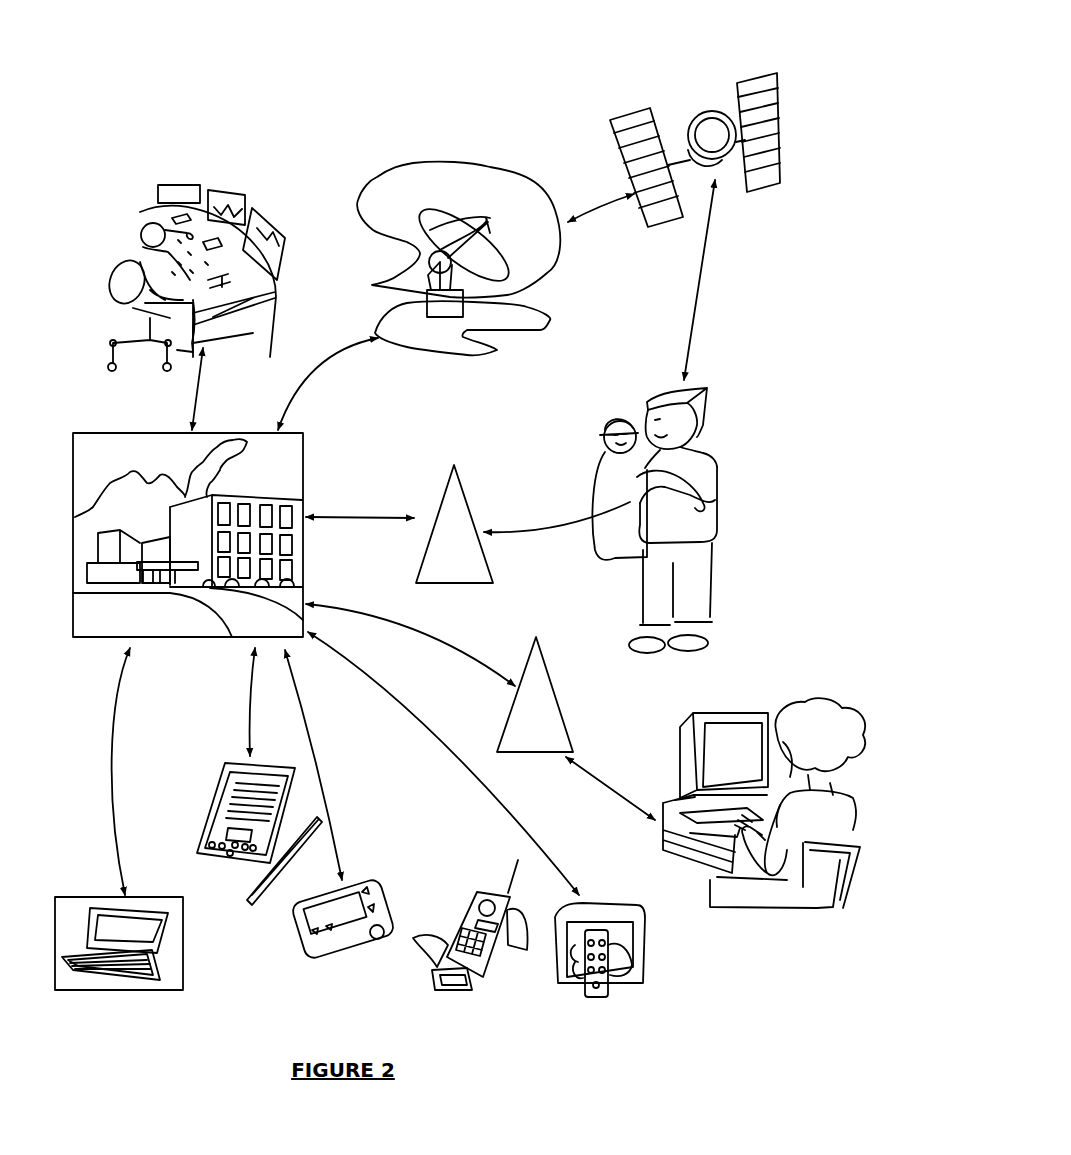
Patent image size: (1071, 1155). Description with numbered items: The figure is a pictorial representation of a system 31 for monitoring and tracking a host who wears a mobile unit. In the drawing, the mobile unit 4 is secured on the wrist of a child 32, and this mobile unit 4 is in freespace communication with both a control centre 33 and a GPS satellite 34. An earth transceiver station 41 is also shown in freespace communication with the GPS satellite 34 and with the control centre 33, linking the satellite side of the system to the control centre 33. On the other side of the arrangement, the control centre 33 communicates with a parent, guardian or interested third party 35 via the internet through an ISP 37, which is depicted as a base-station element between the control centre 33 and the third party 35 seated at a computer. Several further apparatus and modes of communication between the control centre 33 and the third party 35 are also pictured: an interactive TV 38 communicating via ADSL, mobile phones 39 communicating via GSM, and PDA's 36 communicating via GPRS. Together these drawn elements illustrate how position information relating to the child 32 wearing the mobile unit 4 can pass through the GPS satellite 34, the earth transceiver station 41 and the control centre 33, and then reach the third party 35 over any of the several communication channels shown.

The system 31 is at (367, 108).
The child 32 is at (708, 520).
The control centre 33 is at (145, 442).
The GPS satellite 34 is at (752, 88).
The parent/guardian or interested third party 35 is at (633, 973).
The PDA 36 is at (237, 860).
The ISP 37 is at (543, 705).
The interactive TV 38 is at (563, 948).
The mobile phone 39 is at (455, 993).
The mobile unit 4 is at (647, 485).
The earth transceiver station 41 is at (448, 185).